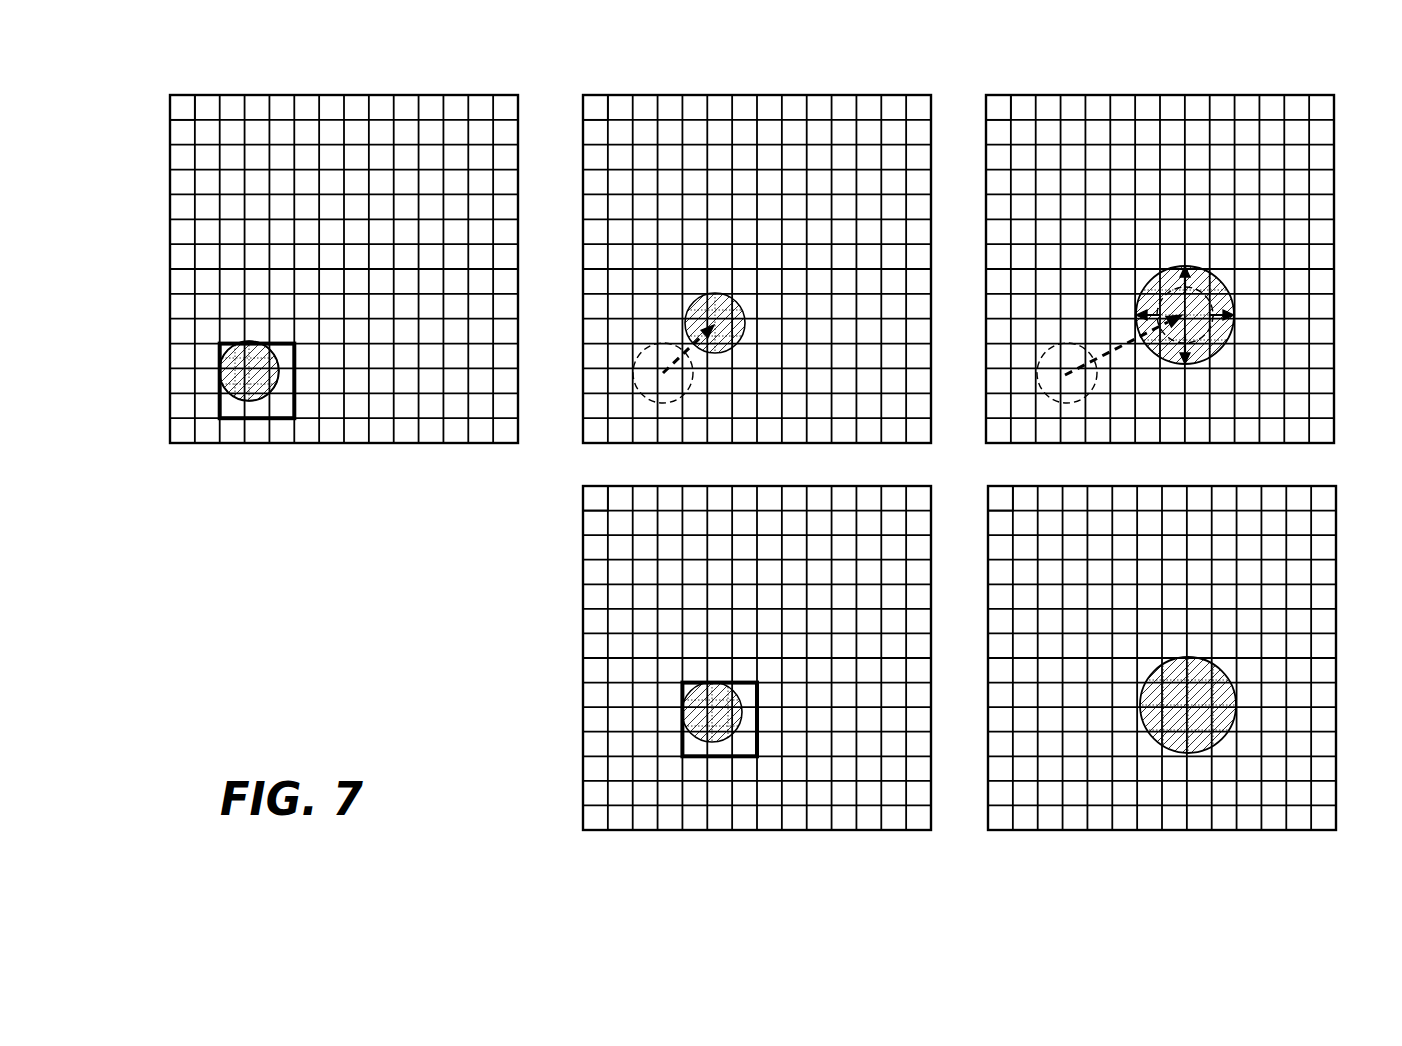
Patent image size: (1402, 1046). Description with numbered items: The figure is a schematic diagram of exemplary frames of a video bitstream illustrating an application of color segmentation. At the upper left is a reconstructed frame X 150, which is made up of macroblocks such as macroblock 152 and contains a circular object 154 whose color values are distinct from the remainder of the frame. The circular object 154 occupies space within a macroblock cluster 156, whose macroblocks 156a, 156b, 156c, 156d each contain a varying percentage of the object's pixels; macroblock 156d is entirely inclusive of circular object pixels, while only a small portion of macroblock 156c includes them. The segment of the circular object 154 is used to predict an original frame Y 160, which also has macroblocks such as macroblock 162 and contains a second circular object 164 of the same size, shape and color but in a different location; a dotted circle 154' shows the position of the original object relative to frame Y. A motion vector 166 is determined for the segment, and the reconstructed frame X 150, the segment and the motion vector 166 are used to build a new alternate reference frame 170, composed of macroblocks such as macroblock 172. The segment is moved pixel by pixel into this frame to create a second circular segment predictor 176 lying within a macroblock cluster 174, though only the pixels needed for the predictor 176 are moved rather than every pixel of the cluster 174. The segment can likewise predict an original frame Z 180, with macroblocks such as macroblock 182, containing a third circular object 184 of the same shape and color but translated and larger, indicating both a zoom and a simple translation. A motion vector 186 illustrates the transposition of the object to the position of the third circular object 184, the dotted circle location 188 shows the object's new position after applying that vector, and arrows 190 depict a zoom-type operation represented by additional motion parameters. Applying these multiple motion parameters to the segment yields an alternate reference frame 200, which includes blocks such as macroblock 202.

The reconstructed frame X 150 is at (490, 103).
The macroblock 152 is at (173, 104).
The circular object 154 is at (213, 370).
The macroblock cluster 156 is at (218, 405).
The macroblock 156a is at (223, 360).
The macroblock 156b is at (250, 343).
The macroblock 156c is at (283, 362).
The macroblock 156d is at (248, 387).
The original frame Y 160 is at (903, 103).
The macroblock 162 is at (587, 104).
The position of circular object 154' is at (615, 363).
The second circular object 164 is at (735, 347).
The motion vector 166 is at (687, 348).
The original frame Z 180 is at (1306, 103).
The macroblock 182 is at (991, 104).
The third circular object 184 is at (1205, 360).
The motion vector 186 is at (1125, 343).
The dotted circle location 188 is at (1165, 342).
The arrows 190 is at (1138, 315).
The new alternate reference frame 170 is at (903, 493).
The macroblock 172 is at (589, 494).
The macroblock cluster 174 is at (682, 742).
The second circular segment predictor 176 is at (682, 692).
The alternate reference frame 200 is at (1307, 493).
The macroblock 202 is at (994, 494).